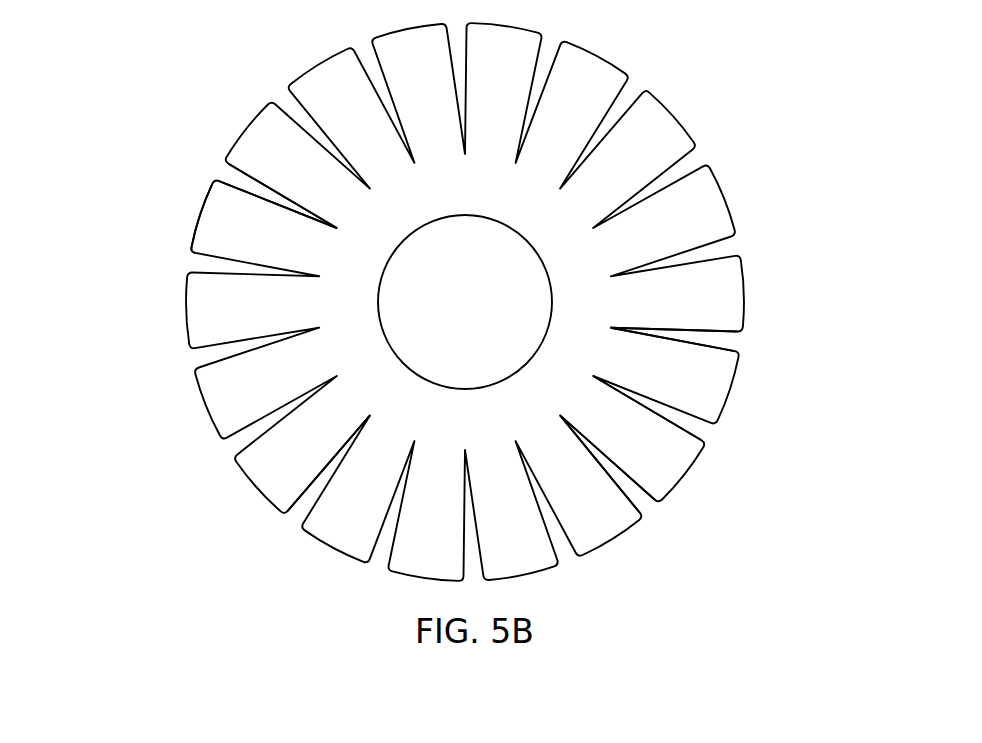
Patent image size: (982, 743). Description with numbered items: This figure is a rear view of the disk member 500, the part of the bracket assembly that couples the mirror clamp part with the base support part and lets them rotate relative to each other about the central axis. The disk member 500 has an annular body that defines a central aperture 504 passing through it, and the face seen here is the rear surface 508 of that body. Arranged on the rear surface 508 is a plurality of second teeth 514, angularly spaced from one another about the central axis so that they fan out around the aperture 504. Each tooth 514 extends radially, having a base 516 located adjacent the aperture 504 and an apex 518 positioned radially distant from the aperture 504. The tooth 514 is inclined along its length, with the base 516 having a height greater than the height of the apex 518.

The heat sink / finned core assembly 500 is at (466, 302).
The central hub 504 is at (477, 277).
The slot between fins 508 is at (667, 328).
The fin 514 is at (283, 482).
The inner ring portion 516 is at (357, 248).
The outer edge of fin 518 is at (190, 258).